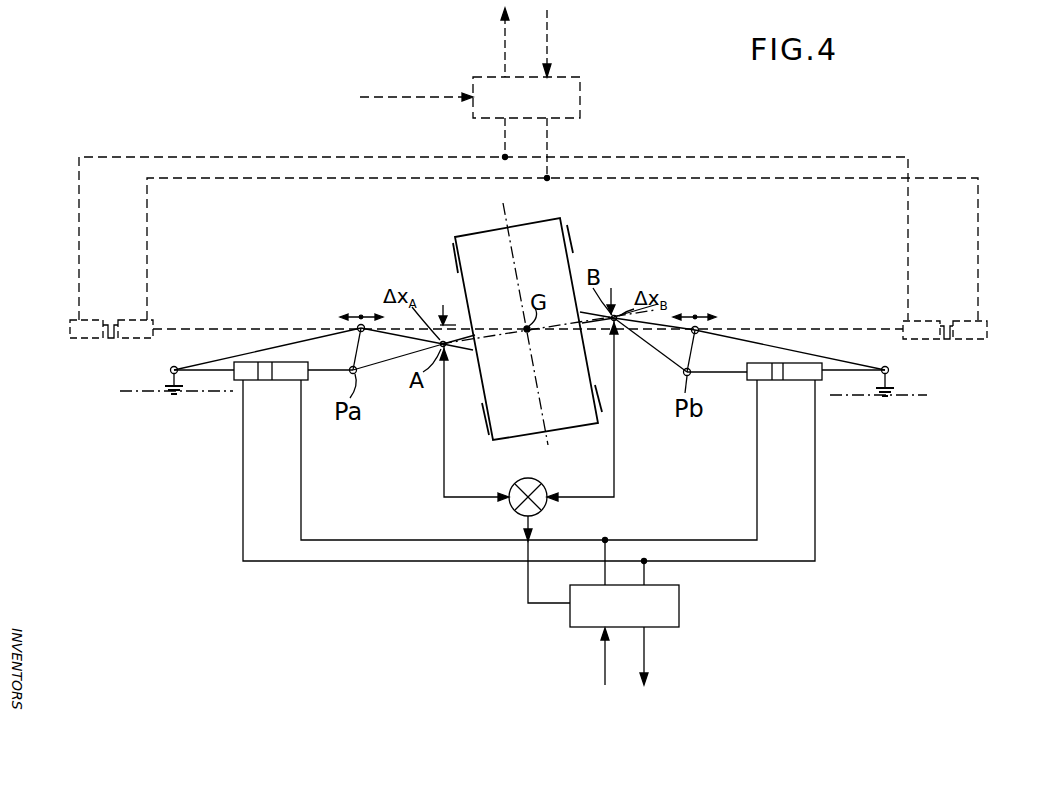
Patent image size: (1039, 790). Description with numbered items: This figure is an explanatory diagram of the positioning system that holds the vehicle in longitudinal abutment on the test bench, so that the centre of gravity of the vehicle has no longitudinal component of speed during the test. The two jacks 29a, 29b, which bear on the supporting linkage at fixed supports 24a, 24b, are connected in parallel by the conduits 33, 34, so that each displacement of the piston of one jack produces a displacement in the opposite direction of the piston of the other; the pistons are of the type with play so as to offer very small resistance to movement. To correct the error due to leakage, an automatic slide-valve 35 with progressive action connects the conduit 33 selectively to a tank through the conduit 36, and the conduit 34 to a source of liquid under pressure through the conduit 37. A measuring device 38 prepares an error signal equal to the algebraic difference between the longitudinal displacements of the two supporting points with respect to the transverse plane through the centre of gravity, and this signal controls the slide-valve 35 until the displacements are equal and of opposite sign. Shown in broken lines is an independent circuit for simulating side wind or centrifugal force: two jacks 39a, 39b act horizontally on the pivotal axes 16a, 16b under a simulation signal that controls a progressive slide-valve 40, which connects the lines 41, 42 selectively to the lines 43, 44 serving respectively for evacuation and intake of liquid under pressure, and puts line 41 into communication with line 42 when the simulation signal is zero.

The pivotal axis 16a is at (354, 326).
The pivotal axis 16b is at (701, 327).
The fixed pivot support (left) 24a is at (123, 392).
The fixed pivot support (right) 24b is at (927, 395).
The jack 29a is at (282, 376).
The jack 29b is at (793, 376).
The conduit 33 is at (243, 500).
The conduit 34 is at (301, 507).
The automatic slide-valve 35 is at (610, 619).
The conduit 36 is at (647, 668).
The conduit 37 is at (605, 672).
The measuring device 38 is at (525, 486).
The jack 39a is at (86, 340).
The jack 39b is at (972, 341).
The slide-valve 40 is at (513, 109).
The line 41 is at (80, 247).
The line 42 is at (148, 247).
The line 43 is at (505, 43).
The line 44 is at (549, 39).